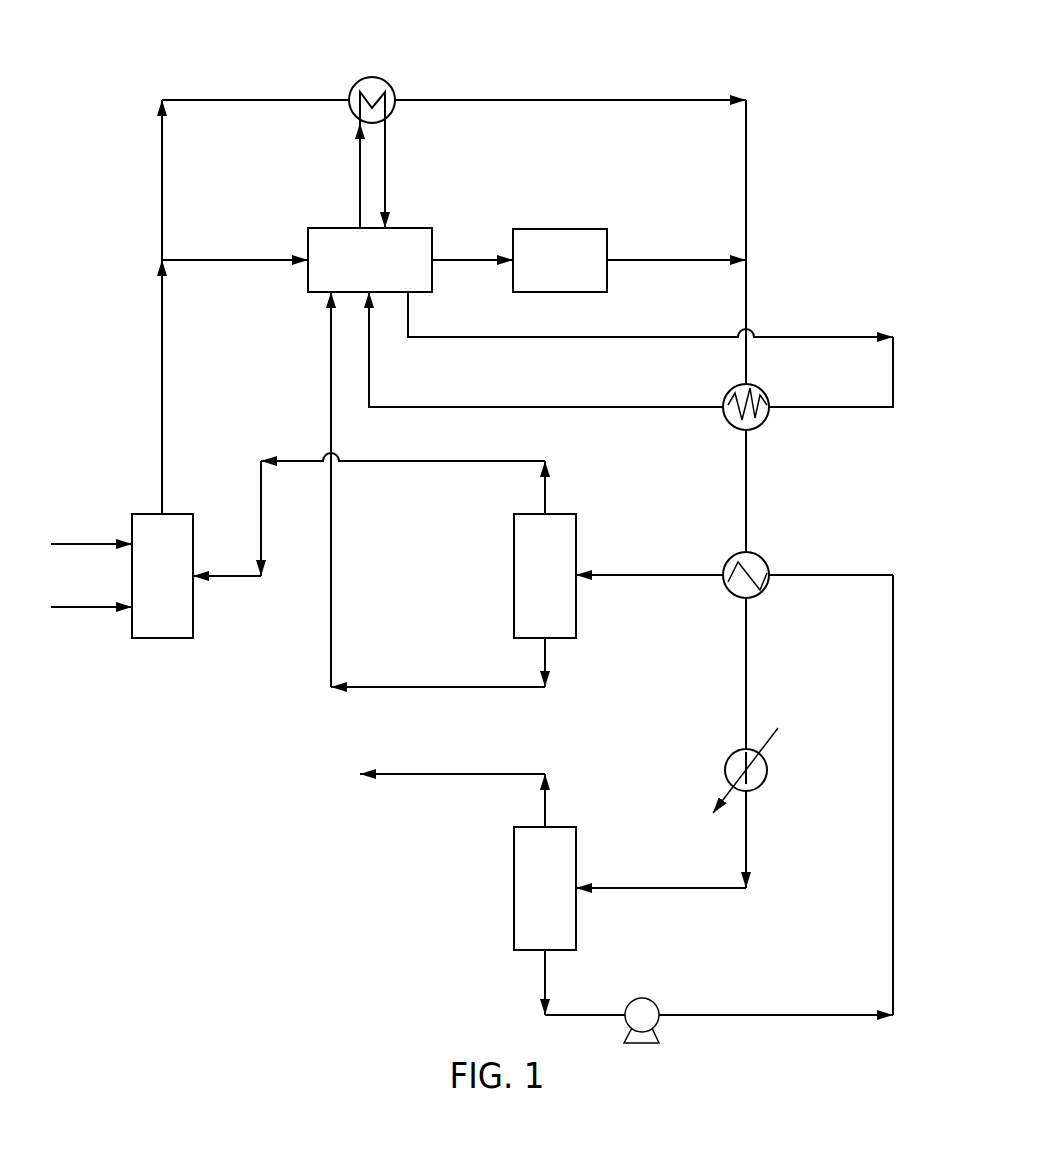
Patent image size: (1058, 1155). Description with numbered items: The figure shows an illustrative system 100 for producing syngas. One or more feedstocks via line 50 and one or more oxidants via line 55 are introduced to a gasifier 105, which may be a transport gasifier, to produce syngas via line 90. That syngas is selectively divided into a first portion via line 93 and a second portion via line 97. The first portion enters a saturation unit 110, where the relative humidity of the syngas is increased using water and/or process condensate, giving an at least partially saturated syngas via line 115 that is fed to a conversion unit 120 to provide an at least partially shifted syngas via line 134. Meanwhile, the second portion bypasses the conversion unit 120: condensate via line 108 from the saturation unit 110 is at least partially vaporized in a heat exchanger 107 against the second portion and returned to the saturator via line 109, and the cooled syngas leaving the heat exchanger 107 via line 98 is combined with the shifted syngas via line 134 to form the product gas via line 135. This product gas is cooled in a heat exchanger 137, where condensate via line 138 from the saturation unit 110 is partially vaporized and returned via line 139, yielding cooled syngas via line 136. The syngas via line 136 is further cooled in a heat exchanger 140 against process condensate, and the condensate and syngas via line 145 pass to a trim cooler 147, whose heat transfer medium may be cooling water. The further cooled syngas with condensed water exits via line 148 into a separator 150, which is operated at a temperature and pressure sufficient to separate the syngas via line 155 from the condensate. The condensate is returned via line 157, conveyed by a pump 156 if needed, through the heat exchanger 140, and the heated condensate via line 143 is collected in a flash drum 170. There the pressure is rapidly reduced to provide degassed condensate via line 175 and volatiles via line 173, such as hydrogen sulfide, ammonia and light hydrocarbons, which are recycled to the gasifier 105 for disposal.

The system 100 is at (812, 84).
The feedstock line 50 is at (81, 544).
The oxidant line 55 is at (84, 610).
The syngas line 90 is at (162, 383).
The first portion line 93 is at (226, 260).
The second portion line 97 is at (226, 99).
The cooled syngas line 98 is at (598, 99).
The gasifier 105 is at (145, 583).
The heat exchanger 107 is at (371, 78).
The condensate line 108 is at (357, 153).
The vaporized condensate return line 109 is at (387, 152).
The saturation unit 110 is at (352, 274).
The saturated syngas line 115 is at (462, 260).
The conversion unit 120 is at (542, 274).
The shifted syngas line 134 is at (665, 260).
The product gas line 135 is at (746, 290).
The cooled syngas line 136 is at (746, 490).
The heat exchanger 137 is at (762, 392).
The condensate line 138 is at (650, 337).
The vaporized condensate return line 139 is at (598, 408).
The heat exchanger 140 is at (759, 592).
The heated condensate line 143 is at (637, 575).
The condensate and syngas line 145 is at (746, 676).
The trim cooler 147 is at (767, 775).
The cooled syngas line 148 is at (650, 888).
The separator 150 is at (527, 896).
The syngas line 155 is at (435, 775).
The pump 156 is at (639, 1000).
The condensate line 157 is at (716, 1015).
The flash drum 170 is at (527, 583).
The volatiles line 173 is at (403, 462).
The degassed condensate line 175 is at (467, 687).